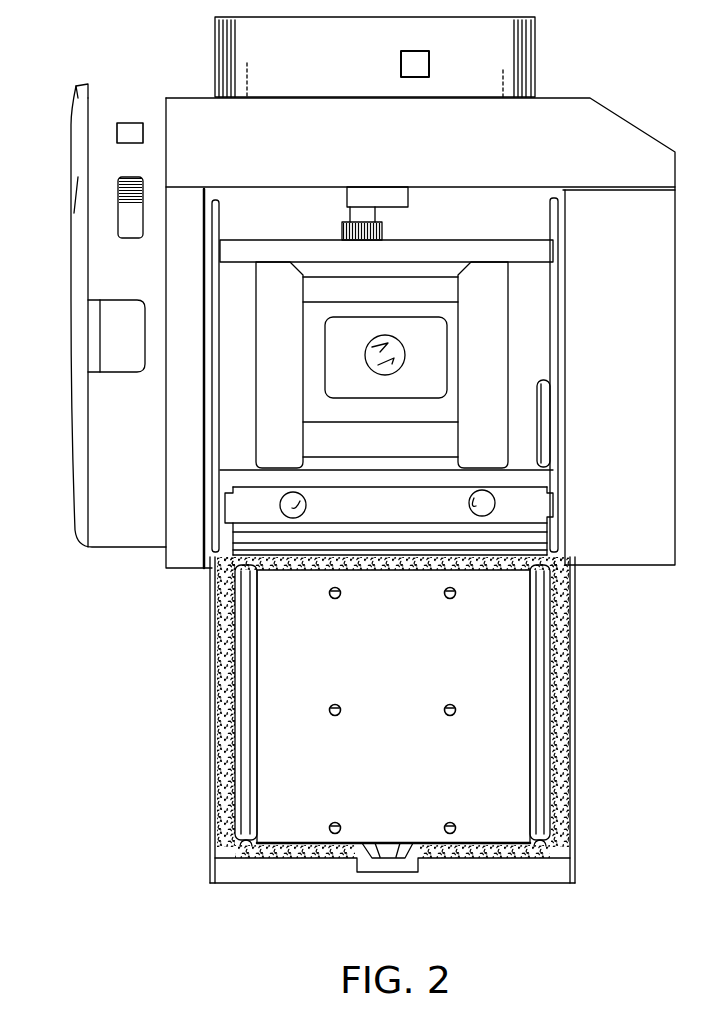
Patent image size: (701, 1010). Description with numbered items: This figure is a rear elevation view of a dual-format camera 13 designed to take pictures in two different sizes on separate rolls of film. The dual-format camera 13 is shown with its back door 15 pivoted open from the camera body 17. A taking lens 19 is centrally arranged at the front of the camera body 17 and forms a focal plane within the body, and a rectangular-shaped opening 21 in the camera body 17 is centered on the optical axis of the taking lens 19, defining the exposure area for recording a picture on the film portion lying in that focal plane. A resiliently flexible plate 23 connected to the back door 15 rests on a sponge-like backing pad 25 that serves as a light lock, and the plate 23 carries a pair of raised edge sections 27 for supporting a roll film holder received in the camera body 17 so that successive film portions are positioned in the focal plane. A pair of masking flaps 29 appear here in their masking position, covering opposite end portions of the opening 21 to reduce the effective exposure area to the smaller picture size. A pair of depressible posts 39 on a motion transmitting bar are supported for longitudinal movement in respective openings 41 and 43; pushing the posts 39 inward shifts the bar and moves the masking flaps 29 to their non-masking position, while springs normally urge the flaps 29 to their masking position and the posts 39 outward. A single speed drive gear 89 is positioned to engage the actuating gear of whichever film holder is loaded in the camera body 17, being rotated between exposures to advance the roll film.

The dual-format camera 13 is at (162, 94).
The back door 15 is at (212, 693).
The camera body 17 is at (128, 463).
The taking lens 19 is at (390, 336).
The rectangular-shaped opening 21 is at (320, 411).
The resiliently flexible plate 23 is at (402, 664).
The sponge-like backing pad 25 is at (562, 700).
The raised edge sections 27 is at (250, 796).
The masking flaps 29 is at (295, 366).
The depressible posts 39 is at (306, 505).
The opening 41 is at (495, 503).
The opening 43 is at (280, 506).
The single speed drive gear 89 is at (342, 232).